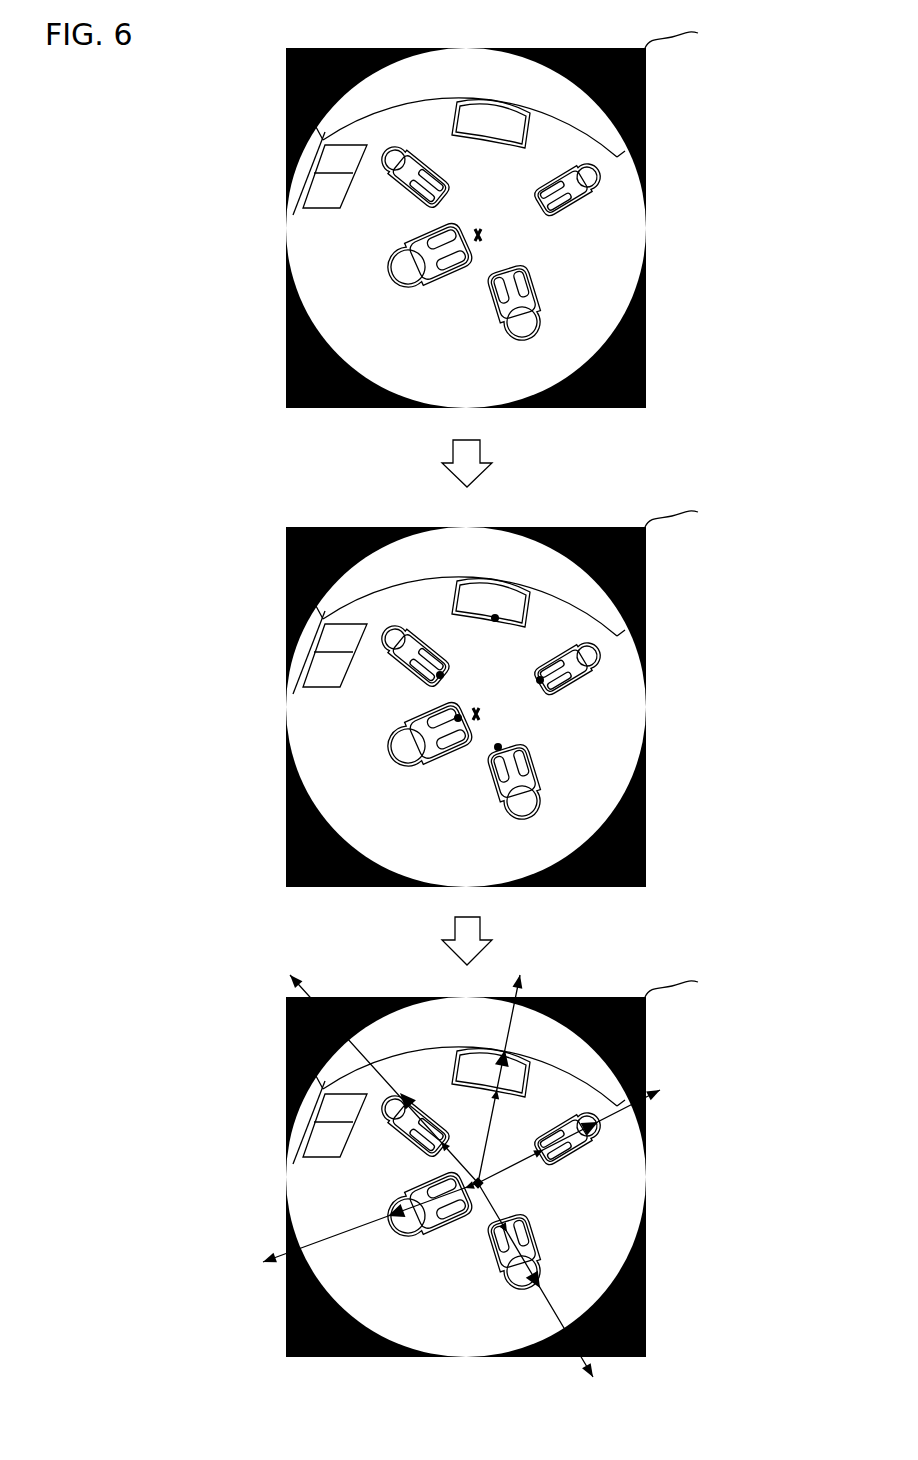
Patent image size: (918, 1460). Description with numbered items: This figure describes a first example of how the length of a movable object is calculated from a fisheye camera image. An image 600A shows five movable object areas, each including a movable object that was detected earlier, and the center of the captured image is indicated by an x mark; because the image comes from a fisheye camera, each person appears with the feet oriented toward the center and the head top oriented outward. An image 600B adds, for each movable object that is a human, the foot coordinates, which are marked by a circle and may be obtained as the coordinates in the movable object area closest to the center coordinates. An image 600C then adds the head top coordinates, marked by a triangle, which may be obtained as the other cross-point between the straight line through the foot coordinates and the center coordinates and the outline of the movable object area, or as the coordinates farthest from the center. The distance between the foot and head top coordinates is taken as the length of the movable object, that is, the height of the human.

The image 600A is at (712, 32).
The image 600B is at (712, 511).
The image 600C is at (712, 985).